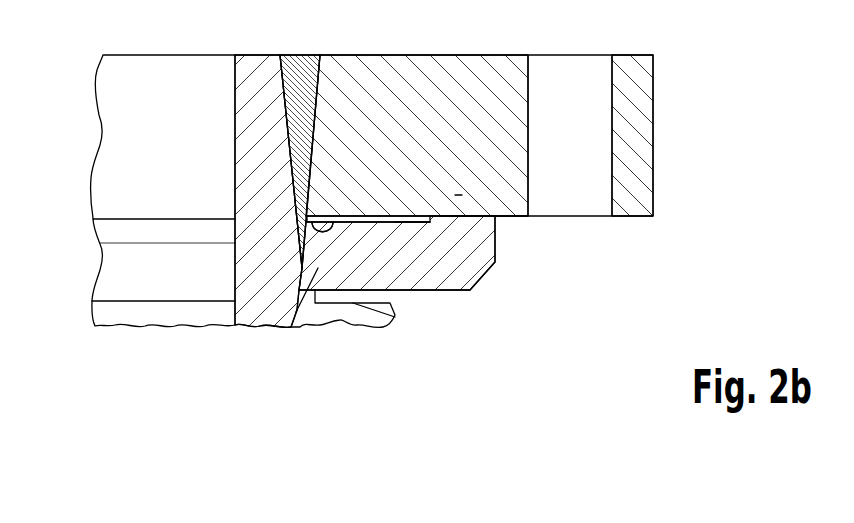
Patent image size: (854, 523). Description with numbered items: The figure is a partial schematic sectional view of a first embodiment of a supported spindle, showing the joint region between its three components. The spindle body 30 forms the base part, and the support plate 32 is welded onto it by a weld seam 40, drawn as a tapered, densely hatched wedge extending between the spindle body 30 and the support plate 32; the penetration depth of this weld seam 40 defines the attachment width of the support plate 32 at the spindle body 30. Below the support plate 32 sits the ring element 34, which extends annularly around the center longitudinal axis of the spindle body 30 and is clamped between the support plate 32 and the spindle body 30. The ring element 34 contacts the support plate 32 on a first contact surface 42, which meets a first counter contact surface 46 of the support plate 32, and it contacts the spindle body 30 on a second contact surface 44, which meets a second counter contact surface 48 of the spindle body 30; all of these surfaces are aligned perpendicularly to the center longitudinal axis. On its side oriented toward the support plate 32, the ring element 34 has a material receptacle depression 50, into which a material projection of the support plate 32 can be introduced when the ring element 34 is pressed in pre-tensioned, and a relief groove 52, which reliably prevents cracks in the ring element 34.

The spindle body 30 is at (128, 268).
The support plate 32 is at (636, 154).
The ring element 34 is at (455, 252).
The weld seam 40 is at (303, 80).
The first contact surface 42 is at (475, 217).
The second contact surface 44 is at (300, 272).
The first counter contact surface 46 is at (458, 195).
The second counter contact surface 48 is at (305, 300).
The material receptacle depression 50 is at (412, 224).
The relief groove 52 is at (334, 227).